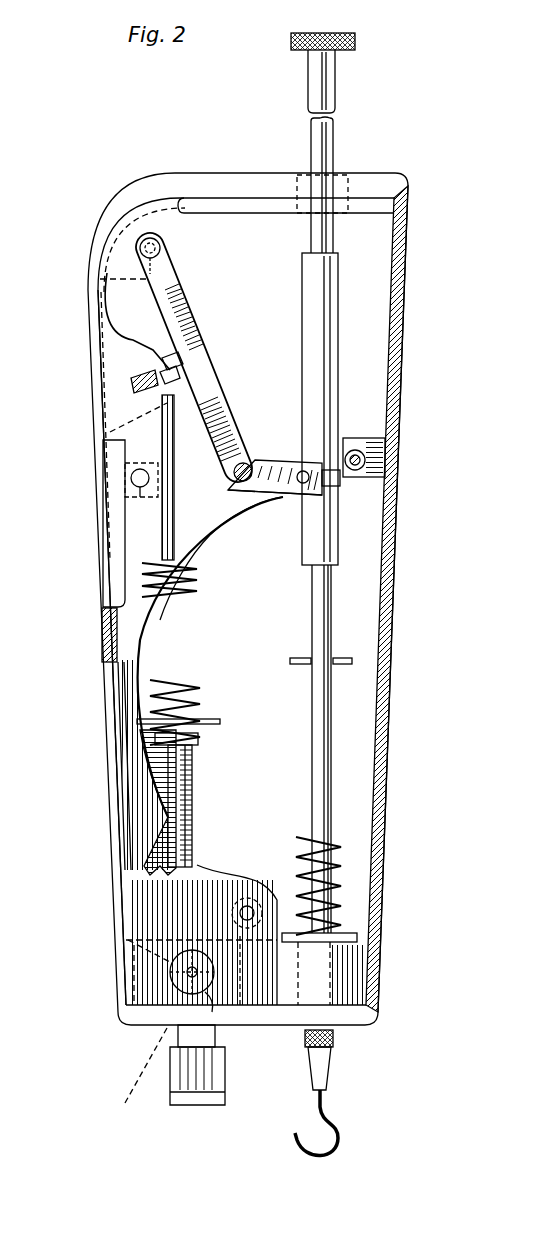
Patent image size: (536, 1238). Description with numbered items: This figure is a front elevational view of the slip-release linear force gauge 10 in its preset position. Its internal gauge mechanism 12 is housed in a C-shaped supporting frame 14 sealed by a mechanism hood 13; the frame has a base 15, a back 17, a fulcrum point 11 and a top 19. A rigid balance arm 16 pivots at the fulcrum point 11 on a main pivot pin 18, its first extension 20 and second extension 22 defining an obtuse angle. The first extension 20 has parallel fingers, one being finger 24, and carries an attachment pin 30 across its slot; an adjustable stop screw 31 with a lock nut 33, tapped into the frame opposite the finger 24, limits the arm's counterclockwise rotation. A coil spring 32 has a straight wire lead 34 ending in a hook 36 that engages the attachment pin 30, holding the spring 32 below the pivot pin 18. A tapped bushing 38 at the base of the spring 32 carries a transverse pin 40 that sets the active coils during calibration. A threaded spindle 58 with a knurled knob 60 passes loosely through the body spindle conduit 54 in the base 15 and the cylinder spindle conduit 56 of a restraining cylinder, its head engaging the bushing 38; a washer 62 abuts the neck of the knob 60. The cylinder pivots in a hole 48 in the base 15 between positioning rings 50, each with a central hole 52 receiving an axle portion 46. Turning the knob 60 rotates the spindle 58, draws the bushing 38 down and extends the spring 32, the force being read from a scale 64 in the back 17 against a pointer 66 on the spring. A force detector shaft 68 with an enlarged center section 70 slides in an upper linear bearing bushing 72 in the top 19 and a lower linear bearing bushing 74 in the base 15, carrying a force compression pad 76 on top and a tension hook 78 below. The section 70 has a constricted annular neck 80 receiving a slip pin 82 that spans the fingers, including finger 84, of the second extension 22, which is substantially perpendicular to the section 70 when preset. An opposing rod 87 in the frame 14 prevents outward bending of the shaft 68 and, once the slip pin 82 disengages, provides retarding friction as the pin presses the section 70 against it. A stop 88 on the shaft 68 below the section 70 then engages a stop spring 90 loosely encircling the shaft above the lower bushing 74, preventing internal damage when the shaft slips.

The slip-type linear force gauge 10 is at (137, 163).
The fulcrum point 11 is at (224, 498).
The internal gauge mechanism 12 is at (360, 340).
The mechanism hood 13 is at (398, 370).
The supporting frame 14 is at (93, 540).
The base 15 is at (353, 990).
The rigid balance arm 16 is at (257, 427).
The back 17 is at (100, 480).
The main pivot pin 18 is at (288, 457).
The top 19 is at (207, 178).
The first extension 20 is at (213, 348).
The second extension 22 is at (255, 468).
The finger 24 is at (177, 322).
The attachment pin 30 is at (160, 240).
The adjustable stop screw 31 is at (180, 372).
The coil spring 32 is at (200, 675).
The lock nut 33 is at (160, 362).
The straight wire lead 34 is at (163, 338).
The hook 36 is at (92, 280).
The tapped bushing 38 is at (198, 742).
The transverse pin 40 is at (213, 723).
The axle portion 46 is at (190, 972).
The cylinder mounting hole 48 is at (196, 970).
The positioning rings 50 is at (177, 977).
The central hole 52 is at (207, 977).
The body spindle conduit 54 is at (222, 900).
The cylinder spindle conduit 56 is at (128, 940).
The threaded spindle 58 is at (193, 807).
The knurled knob 60 is at (227, 1073).
The washer 62 is at (142, 1076).
The scale 64 is at (113, 695).
The pointer 66 is at (147, 727).
The force detector shaft 68 is at (338, 100).
The center section 70 is at (305, 282).
The linear bearing bushing 72 is at (335, 205).
The lower linear bearing bushing 74 is at (353, 937).
The force compression pad 76 is at (357, 42).
The tension hook 78 is at (337, 1148).
The constricted annular neck 80 is at (342, 486).
The slip pin 82 is at (303, 483).
The finger 84 is at (283, 490).
The opposing rod 87 is at (390, 450).
The stop 88 is at (335, 658).
The stop spring 90 is at (337, 837).